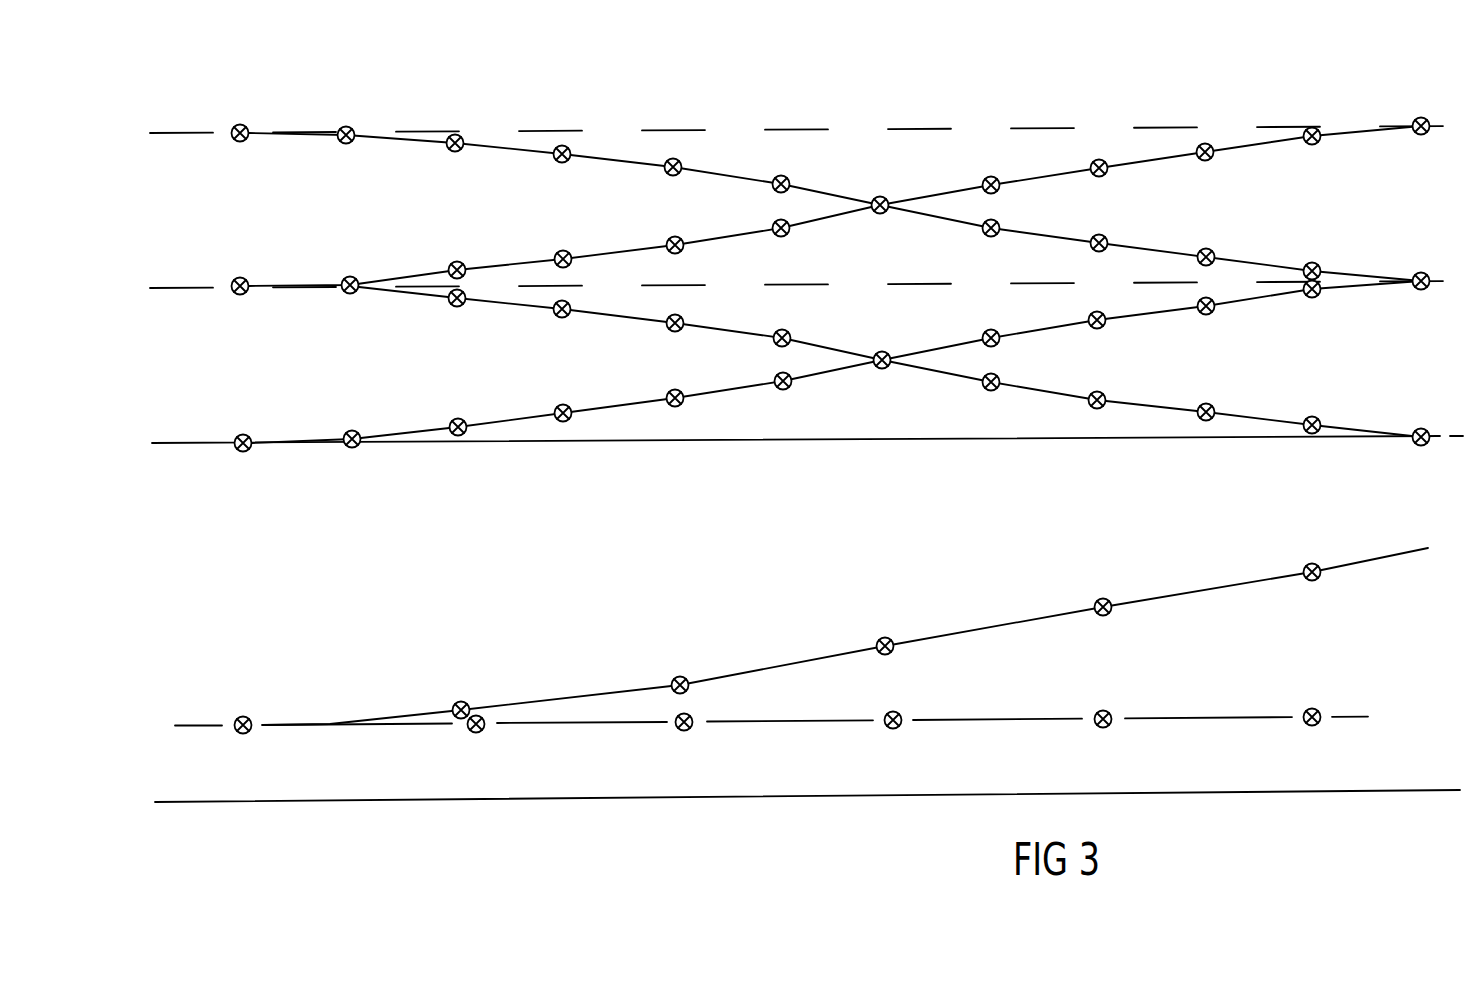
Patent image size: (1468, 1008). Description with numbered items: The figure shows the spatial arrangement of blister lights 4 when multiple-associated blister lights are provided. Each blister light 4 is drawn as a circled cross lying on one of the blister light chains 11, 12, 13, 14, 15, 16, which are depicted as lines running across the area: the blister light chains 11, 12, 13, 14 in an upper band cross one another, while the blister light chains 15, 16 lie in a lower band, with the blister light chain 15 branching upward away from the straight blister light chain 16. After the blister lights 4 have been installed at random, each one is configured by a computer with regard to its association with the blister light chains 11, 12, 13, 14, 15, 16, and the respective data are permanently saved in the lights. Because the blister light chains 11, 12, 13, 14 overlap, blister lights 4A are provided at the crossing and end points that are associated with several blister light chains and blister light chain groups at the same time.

The blister light 4 is at (456, 419).
The multiple-associated blister light 4A is at (880, 196).
The blister light chain 11 is at (502, 147).
The blister light chain 12 is at (620, 253).
The blister light chain 13 is at (507, 299).
The blister light chain 14 is at (627, 403).
The blister light chain 15 is at (558, 700).
The blister light chain 16 is at (624, 721).